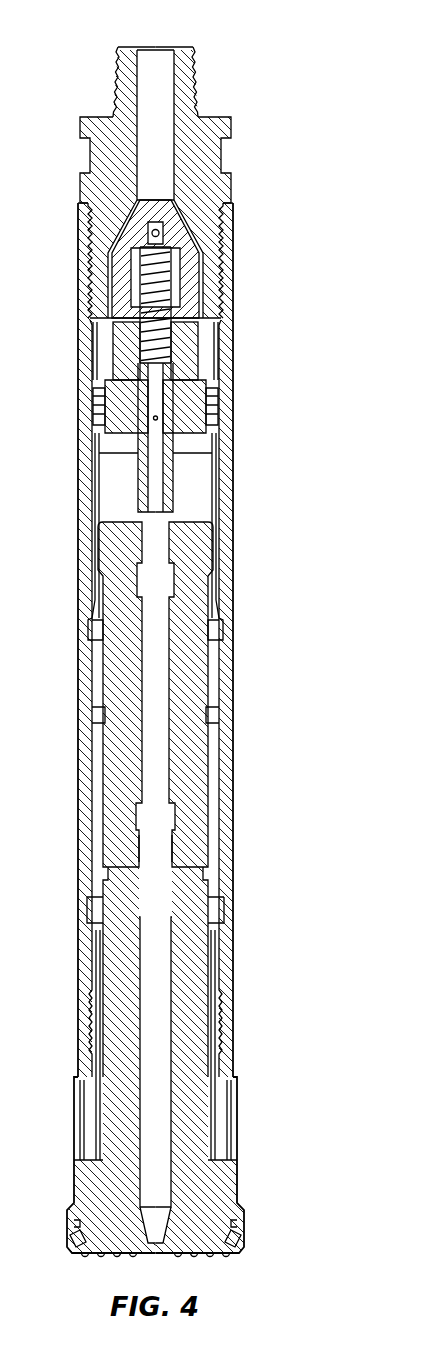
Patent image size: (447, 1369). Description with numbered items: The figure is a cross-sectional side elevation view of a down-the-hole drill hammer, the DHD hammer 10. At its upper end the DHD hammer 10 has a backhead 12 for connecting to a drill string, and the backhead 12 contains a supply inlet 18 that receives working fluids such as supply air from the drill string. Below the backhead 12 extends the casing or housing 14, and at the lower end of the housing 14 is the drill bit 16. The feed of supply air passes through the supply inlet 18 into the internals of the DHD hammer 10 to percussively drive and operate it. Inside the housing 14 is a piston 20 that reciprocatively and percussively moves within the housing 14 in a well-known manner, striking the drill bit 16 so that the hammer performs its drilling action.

The DHD hammer 10 is at (228, 72).
The backhead 12 is at (115, 87).
The housing 14 is at (235, 437).
The drill bit 16 is at (213, 1173).
The supply inlet 18 is at (156, 67).
The piston 20 is at (188, 670).